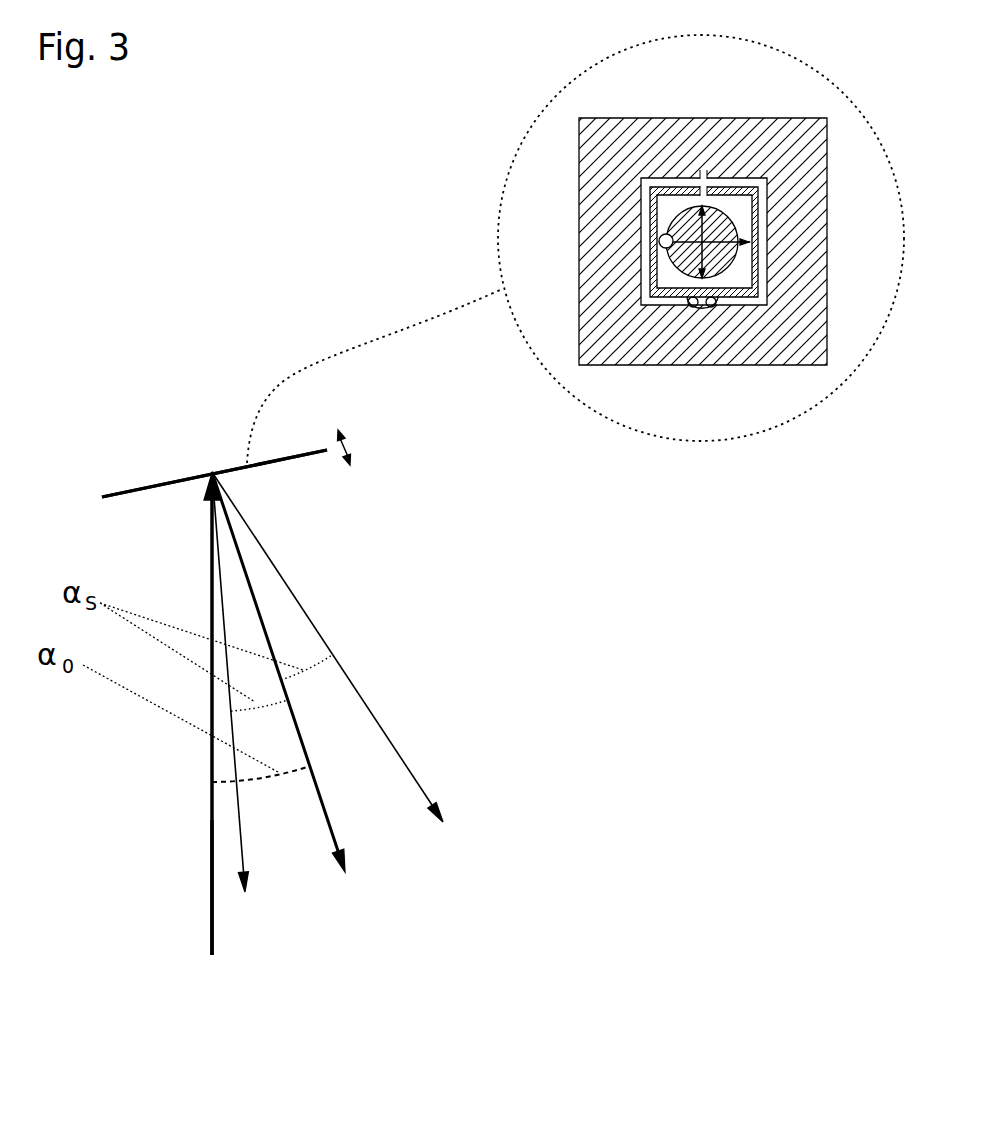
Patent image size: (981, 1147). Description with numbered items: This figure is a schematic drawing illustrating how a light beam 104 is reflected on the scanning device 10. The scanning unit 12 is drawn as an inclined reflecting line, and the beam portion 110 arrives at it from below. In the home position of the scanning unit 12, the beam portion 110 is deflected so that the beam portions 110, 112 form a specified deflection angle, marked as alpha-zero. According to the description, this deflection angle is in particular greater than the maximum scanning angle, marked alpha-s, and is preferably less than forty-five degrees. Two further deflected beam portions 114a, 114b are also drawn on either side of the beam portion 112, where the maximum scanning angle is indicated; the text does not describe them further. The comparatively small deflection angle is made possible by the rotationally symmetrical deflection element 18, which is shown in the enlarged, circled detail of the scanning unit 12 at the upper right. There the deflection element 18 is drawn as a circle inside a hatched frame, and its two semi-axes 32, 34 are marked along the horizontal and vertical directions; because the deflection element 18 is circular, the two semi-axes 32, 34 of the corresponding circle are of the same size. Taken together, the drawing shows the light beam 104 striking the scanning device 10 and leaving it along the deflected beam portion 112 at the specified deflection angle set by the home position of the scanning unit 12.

The scanning device 10 is at (203, 453).
The scanning unit 12 is at (133, 490).
The deflection element 18 is at (727, 215).
The semi-axis 32 is at (690, 243).
The semi-axis 34 is at (713, 250).
The light beam 104 is at (165, 877).
The beam portion 110 is at (211, 817).
The beam portion 112 is at (326, 808).
The deflected beam at first scan extreme 114a is at (243, 848).
The deflected beam at second scan extreme 114b is at (420, 720).